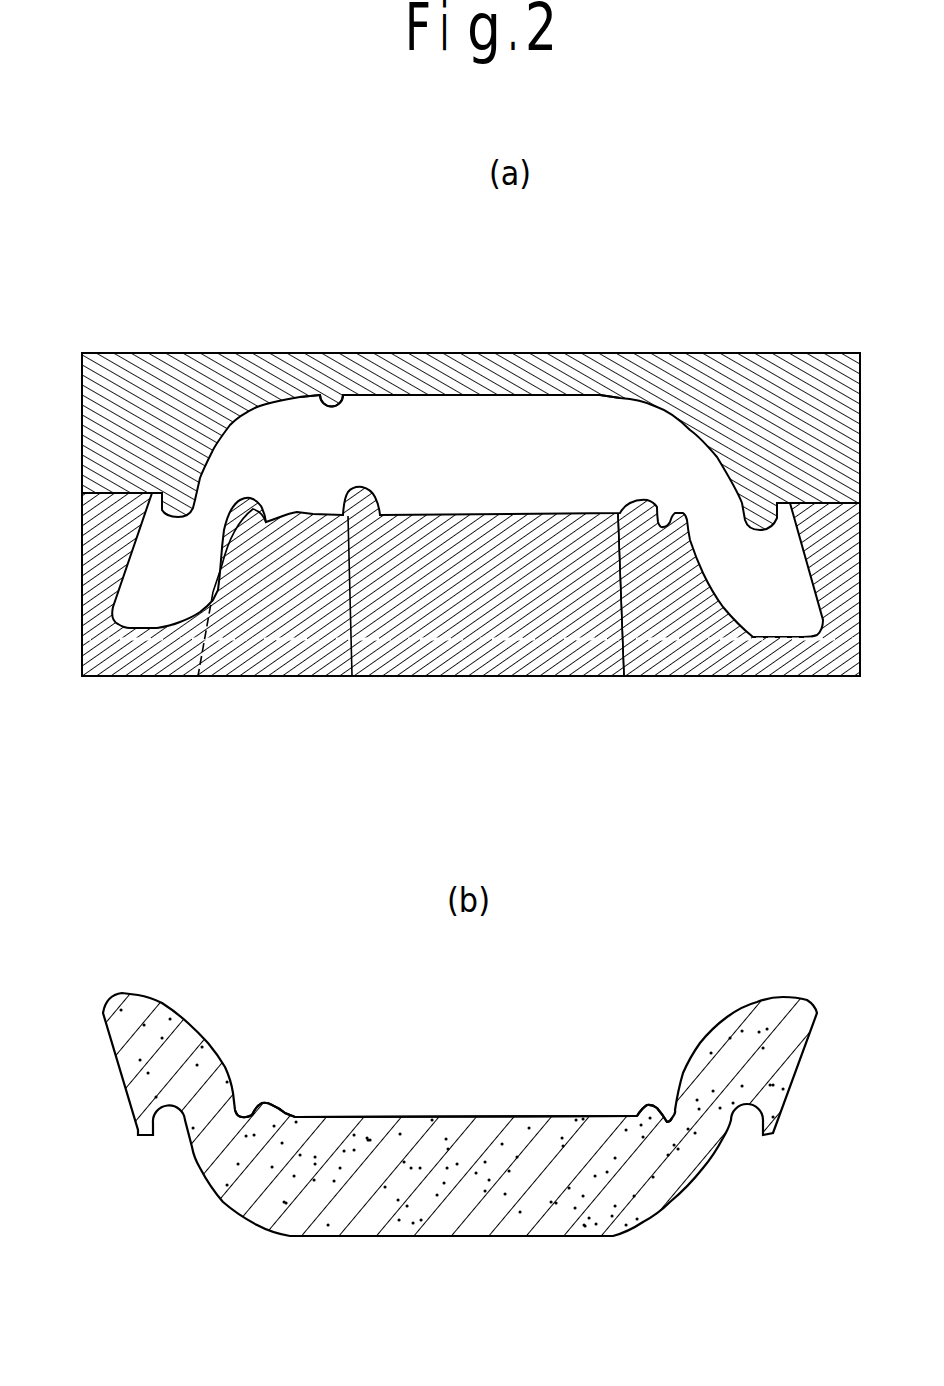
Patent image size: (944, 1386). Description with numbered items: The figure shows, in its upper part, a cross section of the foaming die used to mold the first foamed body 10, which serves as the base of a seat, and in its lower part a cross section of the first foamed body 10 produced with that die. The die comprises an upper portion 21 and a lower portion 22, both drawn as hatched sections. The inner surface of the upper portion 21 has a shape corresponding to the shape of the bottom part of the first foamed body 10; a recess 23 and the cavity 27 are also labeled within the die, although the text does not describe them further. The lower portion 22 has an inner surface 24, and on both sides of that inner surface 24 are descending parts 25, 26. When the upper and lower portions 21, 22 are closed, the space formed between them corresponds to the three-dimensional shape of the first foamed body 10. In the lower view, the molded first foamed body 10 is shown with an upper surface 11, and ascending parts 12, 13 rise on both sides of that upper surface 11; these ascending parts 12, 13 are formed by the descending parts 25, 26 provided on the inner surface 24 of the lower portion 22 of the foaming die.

The first foamed body 10 is at (470, 1237).
The upper surface 11 is at (475, 1113).
The ascending part 12 is at (647, 1105).
The ascending part 13 is at (268, 1103).
The upper portion 21 is at (640, 363).
The lower portion 22 is at (503, 680).
The recess 23 is at (350, 393).
The inner surface 24 is at (353, 678).
The descending part 25 is at (621, 680).
The descending part 26 is at (192, 678).
The cavity 27 is at (457, 432).